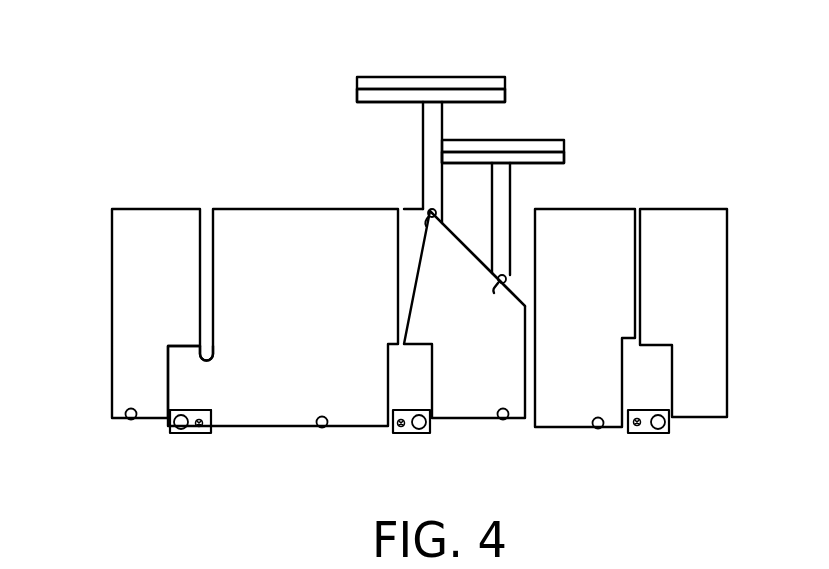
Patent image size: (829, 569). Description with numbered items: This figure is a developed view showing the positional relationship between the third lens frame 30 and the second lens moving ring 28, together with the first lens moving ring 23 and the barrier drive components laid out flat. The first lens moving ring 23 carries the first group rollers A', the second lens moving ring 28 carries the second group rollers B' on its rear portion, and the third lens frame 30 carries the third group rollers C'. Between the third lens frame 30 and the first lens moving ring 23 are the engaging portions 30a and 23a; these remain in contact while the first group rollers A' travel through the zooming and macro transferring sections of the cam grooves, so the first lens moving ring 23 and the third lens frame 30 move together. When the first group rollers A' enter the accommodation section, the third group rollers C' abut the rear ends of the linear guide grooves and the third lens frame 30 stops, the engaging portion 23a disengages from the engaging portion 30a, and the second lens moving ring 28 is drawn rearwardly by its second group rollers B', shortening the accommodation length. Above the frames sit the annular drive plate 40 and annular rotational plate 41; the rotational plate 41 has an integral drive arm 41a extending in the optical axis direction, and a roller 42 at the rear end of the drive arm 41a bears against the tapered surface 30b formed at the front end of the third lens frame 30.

The first lens moving ring 23 is at (207, 435).
The engaging portion 23a is at (192, 410).
The second lens moving ring 28 is at (275, 427).
The third lens frame 30 is at (127, 304).
The engaging portion 30a is at (198, 355).
The tapered surface 30b is at (480, 237).
The drive plate 40 is at (373, 82).
The rotational plate 41 is at (365, 100).
The drive arm 41a is at (430, 175).
The roller 42 is at (430, 222).
The first group rollers A' is at (417, 456).
The second group rollers B' is at (472, 461).
The third group rollers C' is at (326, 450).